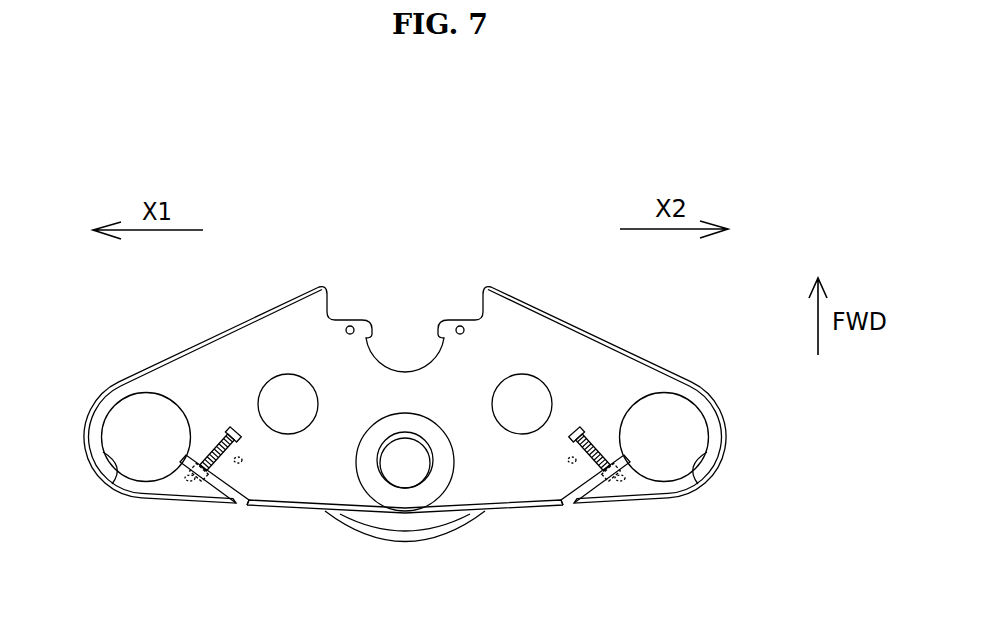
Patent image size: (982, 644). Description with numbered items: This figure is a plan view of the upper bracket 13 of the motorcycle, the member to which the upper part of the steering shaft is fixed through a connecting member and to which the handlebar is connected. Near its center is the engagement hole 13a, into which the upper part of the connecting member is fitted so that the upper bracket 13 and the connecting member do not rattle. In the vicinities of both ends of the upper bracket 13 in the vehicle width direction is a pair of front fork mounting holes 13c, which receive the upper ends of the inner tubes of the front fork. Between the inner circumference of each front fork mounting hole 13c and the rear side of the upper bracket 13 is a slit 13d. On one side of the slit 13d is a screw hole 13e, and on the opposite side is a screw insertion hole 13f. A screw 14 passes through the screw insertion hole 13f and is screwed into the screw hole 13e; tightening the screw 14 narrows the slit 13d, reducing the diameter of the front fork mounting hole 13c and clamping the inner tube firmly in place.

The upper bracket 13 is at (268, 338).
The engagement hole 13a is at (378, 471).
The front fork mounting hole 13c is at (119, 488).
The slit 13d is at (231, 490).
The screw hole 13e is at (236, 463).
The screw insertion hole 13f is at (192, 482).
The screw 14 is at (182, 490).